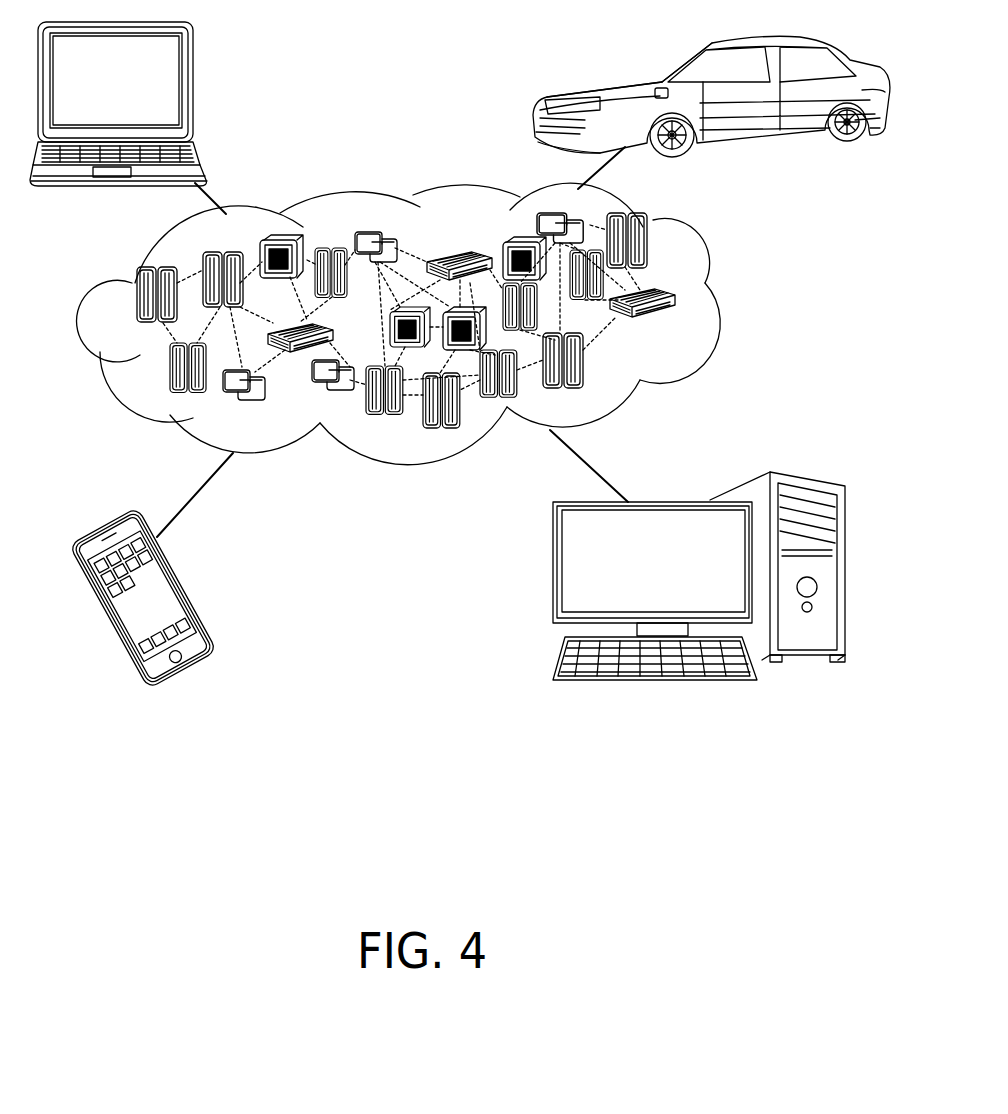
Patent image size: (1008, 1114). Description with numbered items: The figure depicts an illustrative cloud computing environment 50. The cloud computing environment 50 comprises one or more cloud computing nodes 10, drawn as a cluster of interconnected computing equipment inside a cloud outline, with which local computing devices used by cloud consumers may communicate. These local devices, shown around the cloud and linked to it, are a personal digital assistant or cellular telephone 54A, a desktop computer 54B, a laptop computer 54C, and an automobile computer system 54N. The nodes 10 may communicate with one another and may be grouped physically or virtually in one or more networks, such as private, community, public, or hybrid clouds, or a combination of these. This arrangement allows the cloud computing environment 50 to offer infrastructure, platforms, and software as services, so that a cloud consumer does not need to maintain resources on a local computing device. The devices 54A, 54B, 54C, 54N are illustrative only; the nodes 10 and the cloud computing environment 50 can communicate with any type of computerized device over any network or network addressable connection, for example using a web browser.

The cloud computing environment 50 is at (433, 324).
The cloud computing node 10 is at (676, 319).
The personal digital assistant or cellular telephone 54A is at (170, 592).
The desktop computer 54B is at (743, 483).
The laptop computer 54C is at (172, 98).
The automobile computer system 54N is at (542, 108).